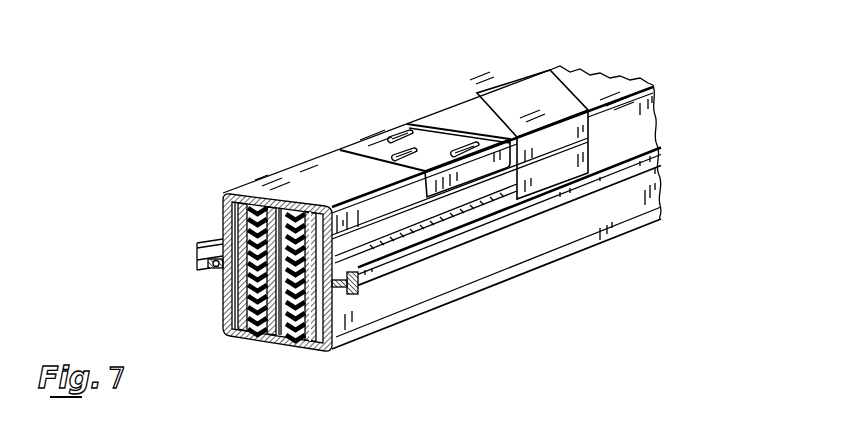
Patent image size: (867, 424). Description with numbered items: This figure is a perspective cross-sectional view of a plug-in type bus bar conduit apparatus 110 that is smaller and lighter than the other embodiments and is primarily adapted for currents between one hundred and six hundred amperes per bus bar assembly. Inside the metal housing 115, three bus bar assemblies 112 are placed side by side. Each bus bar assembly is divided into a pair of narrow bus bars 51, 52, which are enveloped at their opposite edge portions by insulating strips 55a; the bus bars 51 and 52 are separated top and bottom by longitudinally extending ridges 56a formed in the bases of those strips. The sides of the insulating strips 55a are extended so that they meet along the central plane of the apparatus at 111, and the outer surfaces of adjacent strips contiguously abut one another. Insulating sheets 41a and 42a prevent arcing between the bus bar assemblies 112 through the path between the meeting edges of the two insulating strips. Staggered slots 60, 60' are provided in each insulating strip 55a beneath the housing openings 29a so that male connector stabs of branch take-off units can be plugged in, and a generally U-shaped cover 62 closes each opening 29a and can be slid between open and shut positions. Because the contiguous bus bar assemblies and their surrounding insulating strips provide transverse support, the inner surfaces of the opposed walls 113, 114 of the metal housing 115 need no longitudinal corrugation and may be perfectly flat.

The bus bar conduit apparatus 110 is at (316, 144).
The wall of the metal housing 113 is at (327, 160).
The housing opening 29a is at (478, 168).
The insulating strip 55a is at (332, 238).
The longitudinally extending ridge 56a is at (331, 323).
The metal housing 115 is at (467, 277).
The meeting point of insulating strip sides 111 is at (338, 296).
The wall of the metal housing 114 is at (296, 340).
The narrow bus bar 52 is at (252, 203).
The bus bar assembly 112 is at (280, 342).
The narrow bus bar 51 is at (237, 200).
The insulating sheet 42a is at (222, 214).
The insulating sheet 41a is at (222, 238).
The slot 60 is at (425, 141).
The slot 60' is at (416, 129).
The cover 62 is at (512, 102).